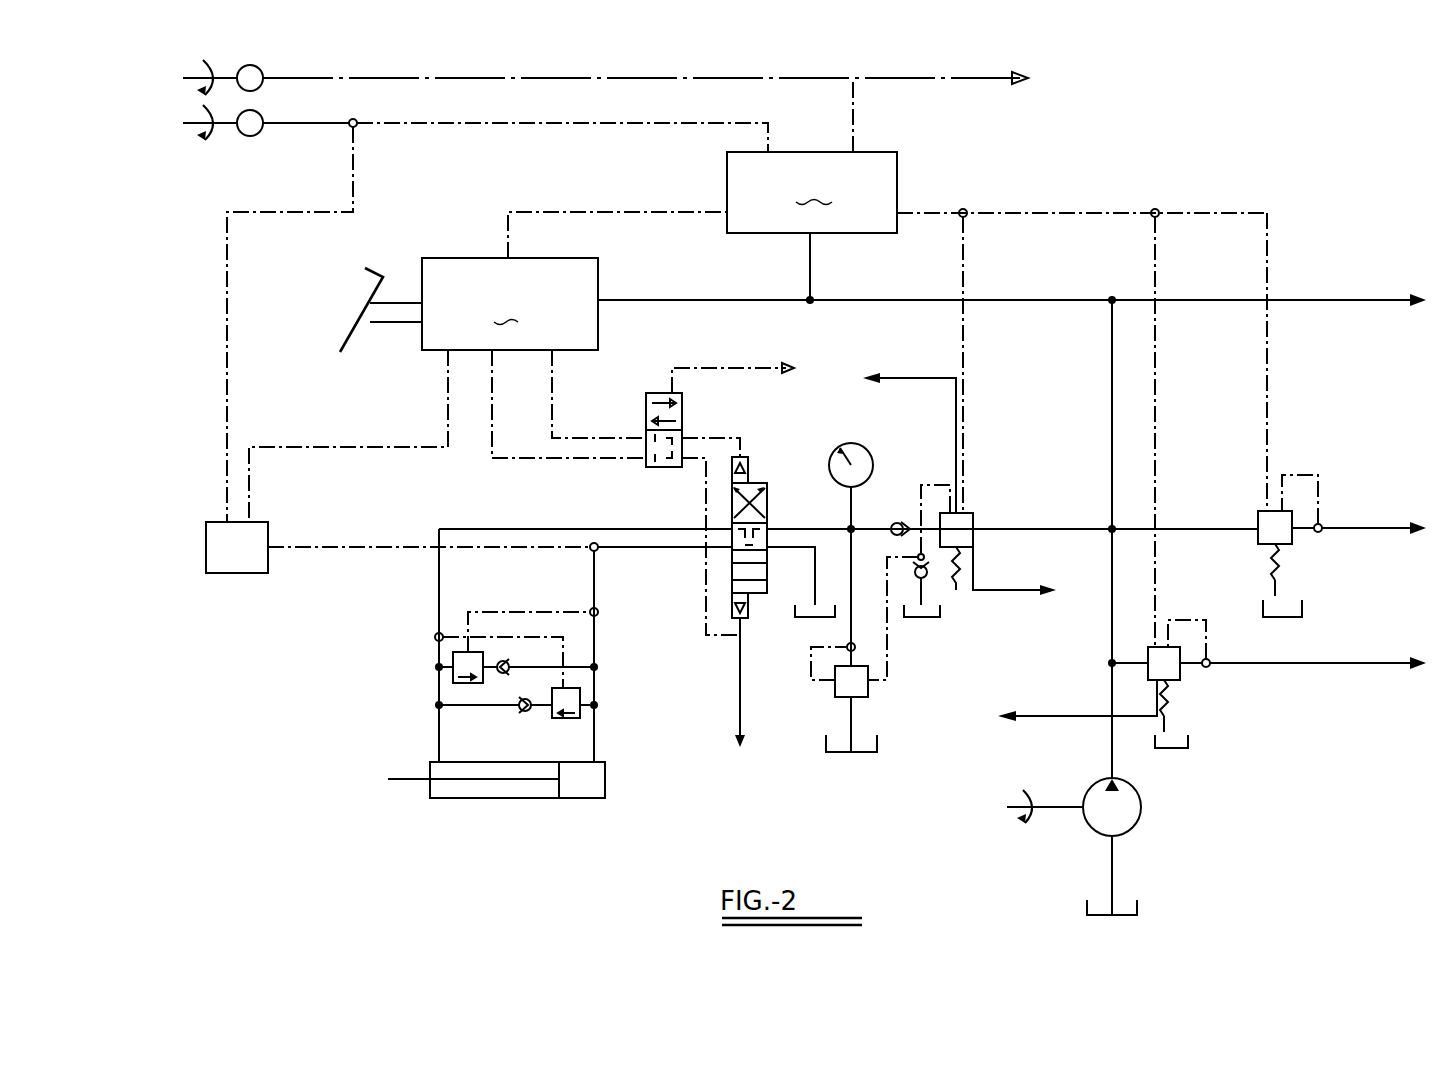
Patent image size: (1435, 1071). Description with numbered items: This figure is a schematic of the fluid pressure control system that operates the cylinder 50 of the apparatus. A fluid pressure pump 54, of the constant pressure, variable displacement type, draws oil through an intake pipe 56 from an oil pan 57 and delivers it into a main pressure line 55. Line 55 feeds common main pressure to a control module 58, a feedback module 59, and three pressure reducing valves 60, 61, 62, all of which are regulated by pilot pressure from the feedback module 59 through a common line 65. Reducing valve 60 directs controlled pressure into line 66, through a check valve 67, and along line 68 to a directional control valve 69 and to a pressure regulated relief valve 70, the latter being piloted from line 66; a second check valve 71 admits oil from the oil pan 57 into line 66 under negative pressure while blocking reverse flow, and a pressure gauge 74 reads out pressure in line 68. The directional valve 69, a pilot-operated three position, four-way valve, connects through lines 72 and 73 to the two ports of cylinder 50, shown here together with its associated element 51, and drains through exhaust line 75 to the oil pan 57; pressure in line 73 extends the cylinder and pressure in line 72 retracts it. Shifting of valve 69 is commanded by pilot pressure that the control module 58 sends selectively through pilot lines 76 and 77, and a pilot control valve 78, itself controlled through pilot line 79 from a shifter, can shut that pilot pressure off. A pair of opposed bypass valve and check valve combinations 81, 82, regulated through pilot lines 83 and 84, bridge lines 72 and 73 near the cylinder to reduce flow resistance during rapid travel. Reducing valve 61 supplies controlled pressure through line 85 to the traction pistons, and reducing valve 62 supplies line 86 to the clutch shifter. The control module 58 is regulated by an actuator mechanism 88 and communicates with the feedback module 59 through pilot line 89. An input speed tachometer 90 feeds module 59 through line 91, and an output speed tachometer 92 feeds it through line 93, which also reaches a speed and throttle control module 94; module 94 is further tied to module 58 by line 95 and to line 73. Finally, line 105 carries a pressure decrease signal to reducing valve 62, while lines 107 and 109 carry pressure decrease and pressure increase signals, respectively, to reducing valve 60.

The cylinder 50 is at (505, 798).
The piston rod 51 is at (410, 779).
The fluid pressure pump 54 is at (1142, 810).
The main pressure line 55 is at (712, 300).
The intake pipe 56 is at (1115, 858).
The oil pan 57 is at (800, 617).
The control module 58 is at (510, 304).
The feedback module 59 is at (812, 193).
The pressure reducing valve 60 is at (975, 515).
The pressure reducing valve 61 is at (1295, 545).
The pressure reducing valve 62 is at (1182, 682).
The common line 65 is at (1267, 213).
The line 66 is at (916, 538).
The check valve 67 is at (897, 522).
The line 68 is at (828, 529).
The directional control valve 69 is at (766, 478).
The pressure regulated relief valve 70 is at (868, 690).
The check valve 71 is at (928, 568).
The line 72 is at (439, 738).
The line 73 is at (360, 547).
The pressure gauge 74 is at (842, 443).
The exhaust line 75 is at (815, 586).
The pilot line 76 is at (492, 395).
The pilot line 77 is at (552, 395).
The pilot control valve 78 is at (652, 395).
The pilot line 79 is at (700, 360).
The pressure regulated bypass valve and check valve combination 81 is at (455, 668).
The pressure regulated bypass valve and check valve combination 82 is at (596, 707).
The pilot line 83 is at (478, 612).
The pilot line 84 is at (565, 640).
The line 85 is at (1400, 528).
The line 86 is at (1400, 663).
The actuator mechanism 88 is at (368, 318).
The pilot pressure line 89 is at (658, 212).
The input speed tachometer 90 is at (285, 62).
The line 91 is at (990, 88).
The output speed feedback tachometer 92 is at (263, 133).
The line 93 is at (492, 130).
The speed and throttle control module 94 is at (206, 548).
The line 95 is at (380, 447).
The line 105 is at (1050, 716).
The line 107 is at (1030, 585).
The line 109 is at (898, 378).